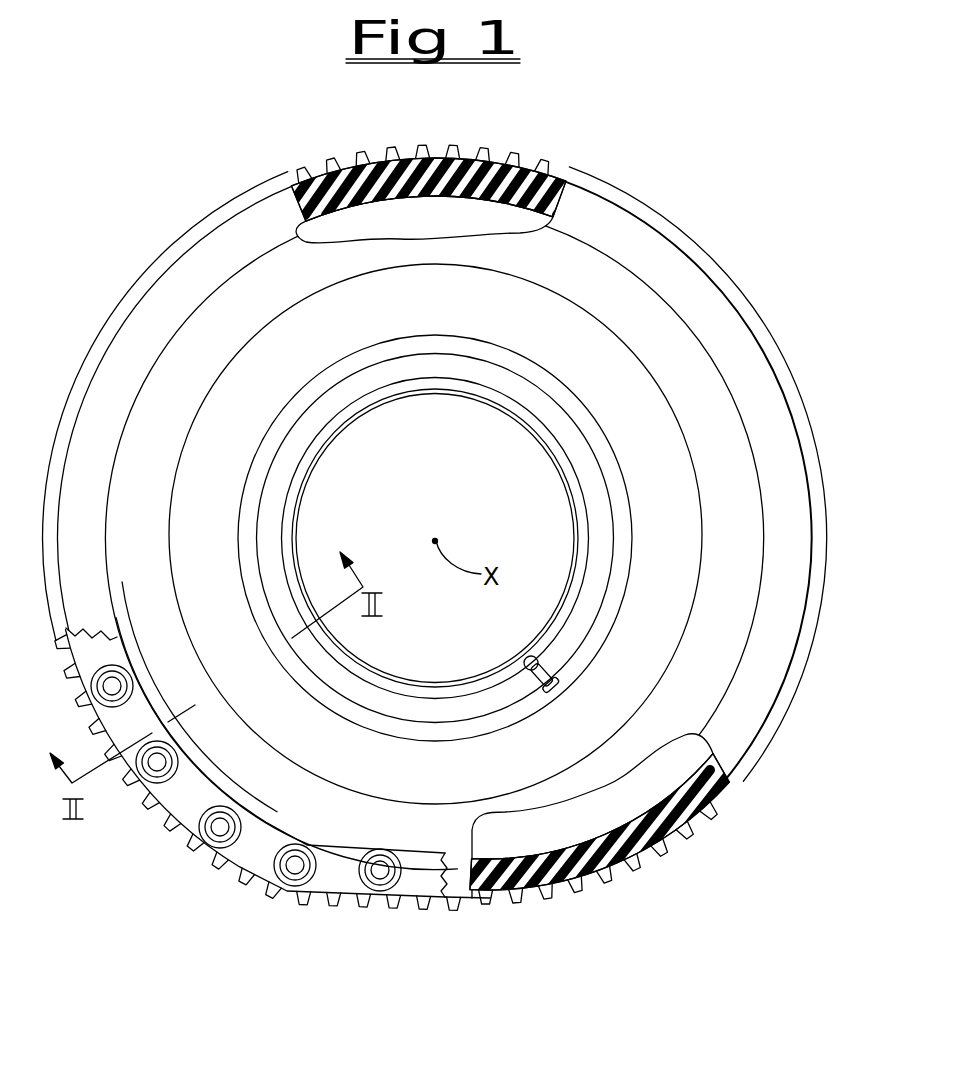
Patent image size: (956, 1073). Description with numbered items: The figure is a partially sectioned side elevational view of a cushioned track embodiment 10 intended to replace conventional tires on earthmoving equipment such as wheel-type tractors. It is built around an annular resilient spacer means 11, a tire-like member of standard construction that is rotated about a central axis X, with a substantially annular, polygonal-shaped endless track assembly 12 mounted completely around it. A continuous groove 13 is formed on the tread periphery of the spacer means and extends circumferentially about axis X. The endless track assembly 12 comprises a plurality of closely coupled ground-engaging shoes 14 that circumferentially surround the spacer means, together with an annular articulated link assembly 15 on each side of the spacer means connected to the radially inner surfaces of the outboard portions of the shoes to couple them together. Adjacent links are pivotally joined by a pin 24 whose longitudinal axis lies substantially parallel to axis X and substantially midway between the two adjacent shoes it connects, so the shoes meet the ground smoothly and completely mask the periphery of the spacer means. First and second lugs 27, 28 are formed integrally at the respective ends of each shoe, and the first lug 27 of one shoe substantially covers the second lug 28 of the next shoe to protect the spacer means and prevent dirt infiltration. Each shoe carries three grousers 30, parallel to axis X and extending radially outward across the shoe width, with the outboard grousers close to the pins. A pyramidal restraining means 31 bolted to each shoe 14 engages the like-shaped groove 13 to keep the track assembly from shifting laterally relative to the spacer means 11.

The cushioned track embodiment 10 is at (672, 190).
The annular resilient spacer means 11 is at (713, 690).
The endless track assembly 12 is at (722, 850).
The continuous groove 13 is at (650, 845).
The ground-engaging shoe 14 is at (396, 909).
The articulated link assembly 15 is at (227, 783).
The pin 24 is at (382, 866).
The first lug 27 is at (211, 862).
The second lug 28 is at (198, 853).
The grousers 30 is at (464, 911).
The restraining means 31 is at (566, 902).